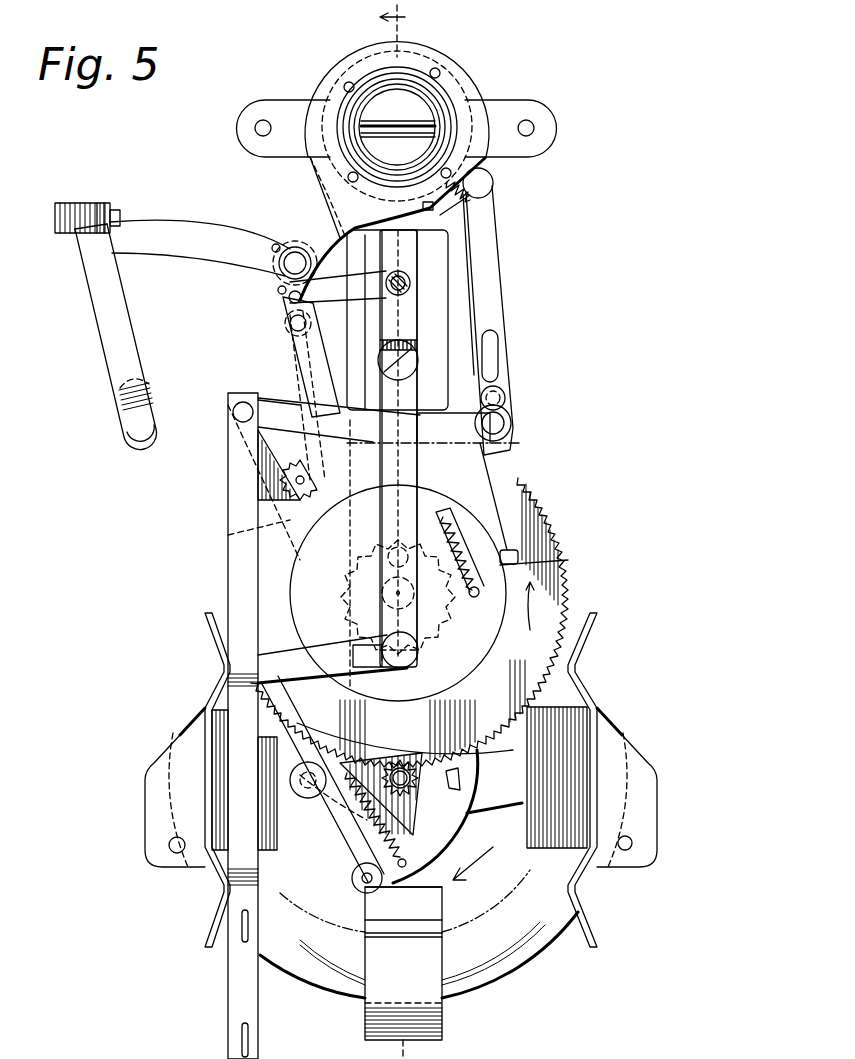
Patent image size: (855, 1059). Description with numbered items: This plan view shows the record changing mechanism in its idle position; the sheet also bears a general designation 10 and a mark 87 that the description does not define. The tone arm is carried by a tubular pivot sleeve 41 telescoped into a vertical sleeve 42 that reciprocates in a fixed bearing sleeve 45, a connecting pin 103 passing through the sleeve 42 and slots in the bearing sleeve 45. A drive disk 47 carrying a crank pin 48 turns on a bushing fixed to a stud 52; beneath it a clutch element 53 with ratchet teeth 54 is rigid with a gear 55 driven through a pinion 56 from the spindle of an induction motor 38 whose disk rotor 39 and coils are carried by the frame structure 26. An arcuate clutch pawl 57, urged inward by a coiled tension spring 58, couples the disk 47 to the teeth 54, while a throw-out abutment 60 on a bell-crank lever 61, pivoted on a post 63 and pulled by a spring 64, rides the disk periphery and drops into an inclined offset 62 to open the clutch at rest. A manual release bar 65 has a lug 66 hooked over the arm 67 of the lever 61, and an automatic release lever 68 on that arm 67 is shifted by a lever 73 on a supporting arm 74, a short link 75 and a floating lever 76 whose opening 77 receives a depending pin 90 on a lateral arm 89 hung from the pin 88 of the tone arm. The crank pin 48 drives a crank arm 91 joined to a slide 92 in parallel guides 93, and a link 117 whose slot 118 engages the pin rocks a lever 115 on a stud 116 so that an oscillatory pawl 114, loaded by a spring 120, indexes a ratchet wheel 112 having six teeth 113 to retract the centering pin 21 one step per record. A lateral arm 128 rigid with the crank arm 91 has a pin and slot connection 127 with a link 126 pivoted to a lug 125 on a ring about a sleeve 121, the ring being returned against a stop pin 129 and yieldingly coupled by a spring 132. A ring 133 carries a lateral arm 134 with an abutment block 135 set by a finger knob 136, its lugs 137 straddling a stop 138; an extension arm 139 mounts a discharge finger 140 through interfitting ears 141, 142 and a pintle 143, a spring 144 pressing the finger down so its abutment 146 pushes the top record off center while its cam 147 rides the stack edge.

The camera apparatus 10 is at (406, 17).
The vertical sleeve 42 is at (372, 75).
The tubular pivot sleeve 41 is at (345, 85).
The bearing sleeve 45 is at (430, 80).
The sleeve 121 is at (455, 95).
The ring 133 is at (470, 110).
The connecting pin 103 is at (420, 123).
The lateral lug 125 is at (493, 172).
The stop pin 129 is at (462, 208).
The coiled tension spring 132 is at (450, 220).
The link 126 is at (495, 280).
The coiled tension spring 64 is at (498, 352).
The pin and slot connection 127 is at (505, 388).
The post 63 is at (510, 420).
The bell-crank lever 61 is at (500, 438).
The gear 55 is at (540, 520).
The throw-out abutment 60 is at (547, 560).
The inclined offset 62 is at (514, 556).
The coiled tension spring 58 is at (458, 515).
The drive disk 47 is at (435, 500).
The direction arrow 87 is at (226, 536).
The induction motor 38 is at (575, 720).
The ratchet teeth 54 is at (398, 547).
The clutch element 53 is at (372, 545).
The stud 52 is at (398, 578).
The crank arm 91 is at (385, 460).
The crank pin 48 is at (405, 665).
The slot 118 is at (375, 668).
The link 117 is at (292, 652).
The clutch pawl 57 is at (370, 740).
The centering pin 21 is at (420, 776).
The teeth 113 is at (470, 782).
The ratchet wheel 112 is at (425, 800).
The pinion 56 is at (405, 860).
The oscillatory pawl 114 is at (388, 887).
The coiled tension spring 120 is at (355, 862).
The lever 115 is at (330, 843).
The stud 116 is at (303, 800).
The disk rotor 39 is at (305, 970).
The frame structure 26 is at (432, 975).
The lever 73 is at (282, 470).
The lever 68 is at (250, 470).
The bar 65 is at (236, 510).
The lug 66 is at (232, 393).
The arm 67 is at (260, 405).
The short link 75 is at (305, 412).
The supporting arm 74 is at (285, 357).
The floating lever 76 is at (300, 345).
The opening 77 is at (311, 323).
The depending pin 90 is at (288, 297).
The lugs 137 is at (280, 289).
The lateral arm 134 is at (314, 190).
The abutment block 135 is at (322, 212).
The finger knob 136 is at (295, 248).
The stop 138 is at (270, 244).
The extension arm 139 is at (165, 228).
The tension spring 144 is at (72, 203).
The ears 142 is at (96, 205).
The ears 141 is at (103, 203).
The pintle 143 is at (118, 212).
The discharge finger 140 is at (118, 306).
The abutment 146 is at (140, 366).
The cam 147 is at (122, 440).
The lateral arm 89 is at (352, 265).
The guides 93 is at (420, 257).
The depending pin 88 is at (410, 287).
The slide 92 is at (405, 335).
The lateral arm 128 is at (430, 385).